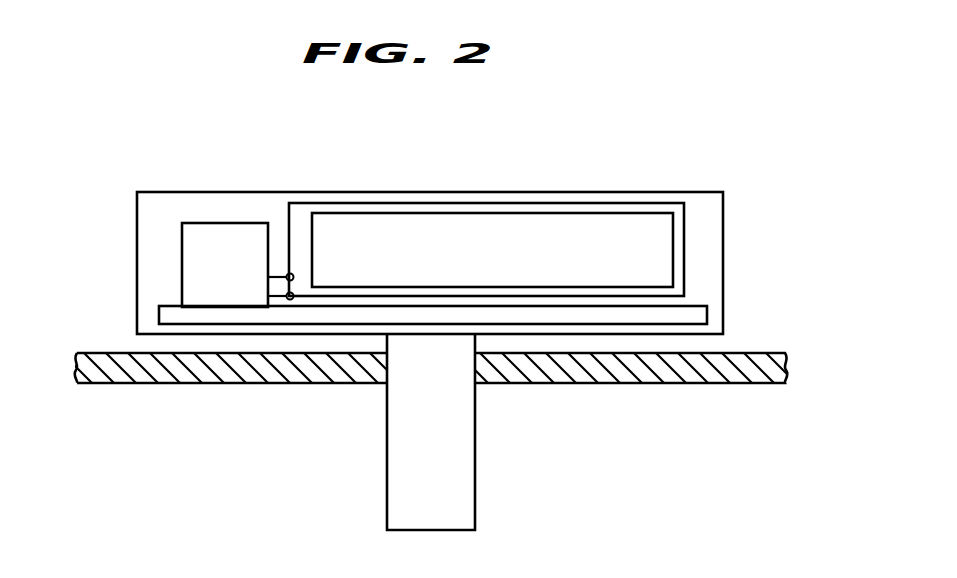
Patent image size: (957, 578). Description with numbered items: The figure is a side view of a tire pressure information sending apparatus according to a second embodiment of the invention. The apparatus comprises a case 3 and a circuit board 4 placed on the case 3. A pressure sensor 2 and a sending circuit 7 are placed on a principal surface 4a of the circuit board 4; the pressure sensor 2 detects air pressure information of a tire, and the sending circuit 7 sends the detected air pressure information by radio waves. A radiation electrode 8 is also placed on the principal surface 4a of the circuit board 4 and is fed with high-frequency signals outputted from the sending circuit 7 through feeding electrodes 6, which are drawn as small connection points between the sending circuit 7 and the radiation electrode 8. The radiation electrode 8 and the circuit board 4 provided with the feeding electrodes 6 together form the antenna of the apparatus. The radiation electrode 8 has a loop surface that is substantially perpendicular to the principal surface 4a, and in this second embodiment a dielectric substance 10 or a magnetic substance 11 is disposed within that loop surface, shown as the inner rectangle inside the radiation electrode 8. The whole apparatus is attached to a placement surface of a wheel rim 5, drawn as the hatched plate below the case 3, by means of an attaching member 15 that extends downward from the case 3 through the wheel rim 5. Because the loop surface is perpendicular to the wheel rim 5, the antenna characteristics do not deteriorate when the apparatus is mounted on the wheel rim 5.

The pressure sensor 2 is at (146, 265).
The sending circuit 7 is at (195, 261).
The case 3 is at (198, 192).
The circuit board 4 is at (492, 371).
The principal surface 4a is at (692, 303).
The wheel rim 5 is at (187, 370).
The feeding electrodes 6 is at (294, 293).
The radiation electrode 8 is at (579, 209).
The dielectric substance 10 is at (591, 250).
The magnetic substance 11 is at (660, 255).
The attaching member 15 is at (455, 503).